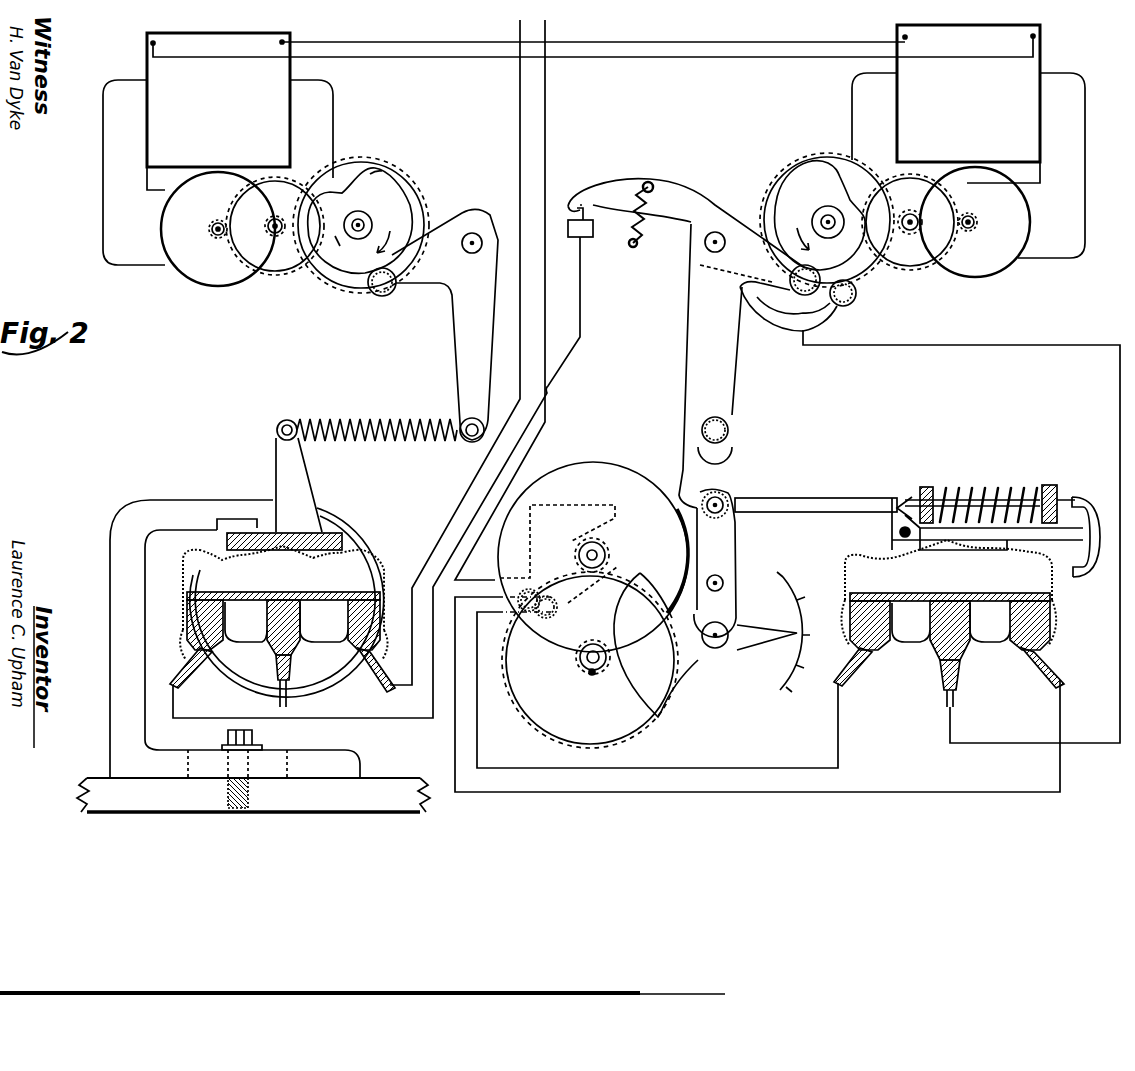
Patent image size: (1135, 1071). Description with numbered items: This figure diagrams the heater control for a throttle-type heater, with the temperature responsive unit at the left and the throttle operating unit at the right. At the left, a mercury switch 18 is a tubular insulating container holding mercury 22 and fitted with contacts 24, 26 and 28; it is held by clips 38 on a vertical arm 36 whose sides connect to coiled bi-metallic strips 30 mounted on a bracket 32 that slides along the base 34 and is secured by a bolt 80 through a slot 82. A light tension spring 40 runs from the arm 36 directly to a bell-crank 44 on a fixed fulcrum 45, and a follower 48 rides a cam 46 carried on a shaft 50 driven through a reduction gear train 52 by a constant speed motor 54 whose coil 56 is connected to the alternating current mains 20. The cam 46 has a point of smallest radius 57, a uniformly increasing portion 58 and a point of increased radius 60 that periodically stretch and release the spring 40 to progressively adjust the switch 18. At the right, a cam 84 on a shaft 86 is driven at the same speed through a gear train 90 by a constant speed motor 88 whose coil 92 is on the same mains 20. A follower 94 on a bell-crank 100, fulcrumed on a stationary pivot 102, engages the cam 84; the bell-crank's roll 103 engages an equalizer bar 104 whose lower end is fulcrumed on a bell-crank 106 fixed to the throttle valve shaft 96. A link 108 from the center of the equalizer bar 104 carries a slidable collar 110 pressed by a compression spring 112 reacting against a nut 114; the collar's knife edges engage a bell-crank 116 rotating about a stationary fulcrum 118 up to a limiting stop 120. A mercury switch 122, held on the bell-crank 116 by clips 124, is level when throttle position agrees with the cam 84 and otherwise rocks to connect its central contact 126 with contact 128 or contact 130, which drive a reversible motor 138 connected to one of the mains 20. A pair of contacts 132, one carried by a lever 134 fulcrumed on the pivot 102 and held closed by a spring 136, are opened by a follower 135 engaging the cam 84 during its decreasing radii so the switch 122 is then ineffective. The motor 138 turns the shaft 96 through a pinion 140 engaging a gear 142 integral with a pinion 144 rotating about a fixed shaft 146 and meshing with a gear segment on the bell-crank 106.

The mercury switch 18 is at (380, 555).
The alternating current mains 20 is at (565, 84).
The mercury 22 is at (283, 598).
The contact 24 is at (176, 686).
The central contact 26 is at (287, 706).
The contact 28 is at (390, 688).
The coiled bi-metallic strips 30 is at (335, 518).
The bracket 32 is at (125, 624).
The base 34 is at (158, 808).
The vertical arm 36 is at (287, 494).
The clips 38 is at (322, 602).
The tension spring 40 is at (383, 420).
The bell-crank 44 is at (478, 330).
The fixed fulcrum 45 is at (472, 247).
The cam 46 is at (362, 247).
The follower 48 is at (382, 296).
The shaft 50 is at (359, 222).
The reduction gear train 52 is at (286, 235).
The constant speed motor 54 is at (183, 250).
The coil 56 is at (226, 127).
The point of smallest radius 57 is at (336, 191).
The uniformly increasing portion 58 is at (410, 185).
The point of increased cam radius 60 is at (380, 171).
The bolt 80 is at (255, 738).
The slot 82 is at (288, 785).
The rotating cam 84 is at (830, 200).
The shaft 86 is at (829, 228).
The constant speed motor 88 is at (1003, 252).
The gear train 90 is at (958, 230).
The coil 92 is at (972, 126).
The cam follower 94 is at (798, 296).
The throttle valve shaft 96 is at (720, 640).
The bell-crank 100 is at (726, 364).
The stationary pivot 102 is at (715, 253).
The roll 103 is at (729, 433).
The equalizer bar 104 is at (710, 564).
The bell-crank 106 is at (714, 592).
The link 108 is at (803, 497).
The slidable collar 110 is at (926, 486).
The compression spring 112 is at (992, 486).
The nut 114 is at (1050, 485).
The bell-crank 116 is at (902, 496).
The stationary fulcrum 118 is at (898, 532).
The limiting stop 120 is at (1088, 500).
The mercury switch 122 is at (846, 575).
The clips 124 is at (993, 605).
The central contact 126 is at (955, 689).
The contact 128 is at (846, 678).
The contact 130 is at (1062, 676).
The pair of contacts 132 is at (586, 240).
The lever 134 is at (690, 232).
The follower 135 is at (853, 302).
The spring 136 is at (640, 248).
The reversible motor 138 is at (621, 496).
The pinion 140 is at (601, 555).
The gear 142 is at (547, 702).
The pinion 144 is at (592, 676).
The fixed shaft 146 is at (586, 655).